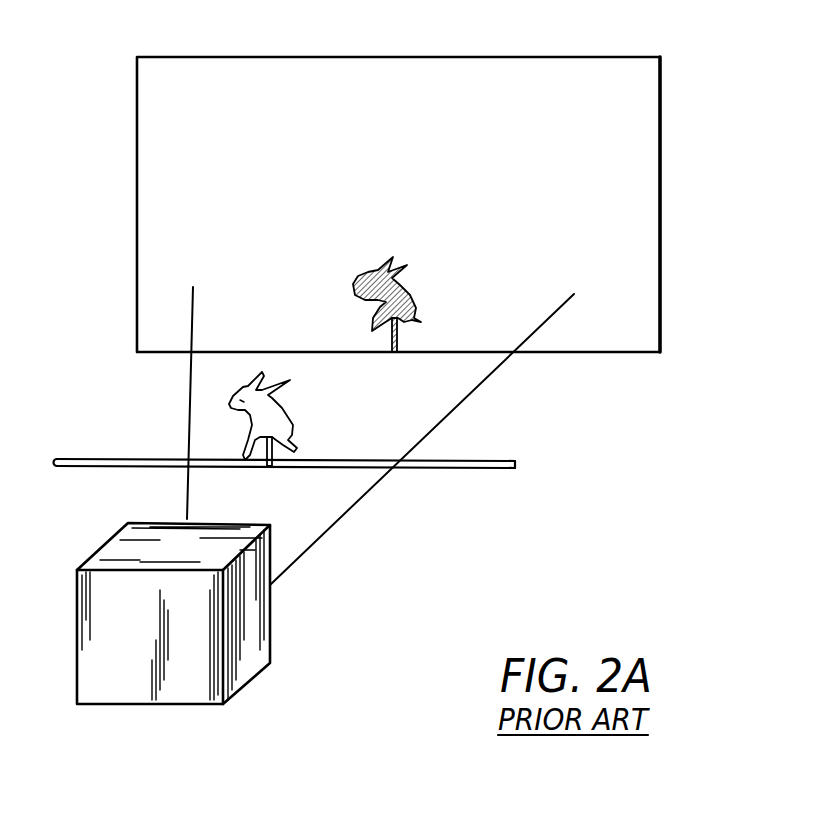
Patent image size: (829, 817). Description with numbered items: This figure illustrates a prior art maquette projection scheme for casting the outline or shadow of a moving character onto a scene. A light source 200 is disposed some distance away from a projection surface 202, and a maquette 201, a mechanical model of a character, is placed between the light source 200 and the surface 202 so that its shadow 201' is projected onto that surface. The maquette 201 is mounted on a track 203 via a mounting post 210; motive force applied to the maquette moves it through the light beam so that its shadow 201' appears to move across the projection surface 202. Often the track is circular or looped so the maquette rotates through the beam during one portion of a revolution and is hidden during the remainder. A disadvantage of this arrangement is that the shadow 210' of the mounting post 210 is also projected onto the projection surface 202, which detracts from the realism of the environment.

The light source 200 is at (247, 631).
The maquette 201 is at (294, 414).
The shadow of maquette 201' is at (380, 264).
The projection surface 202 is at (508, 92).
The track 203 is at (515, 462).
The mounting post 210 is at (298, 471).
The shadow of mounting post 210' is at (448, 326).